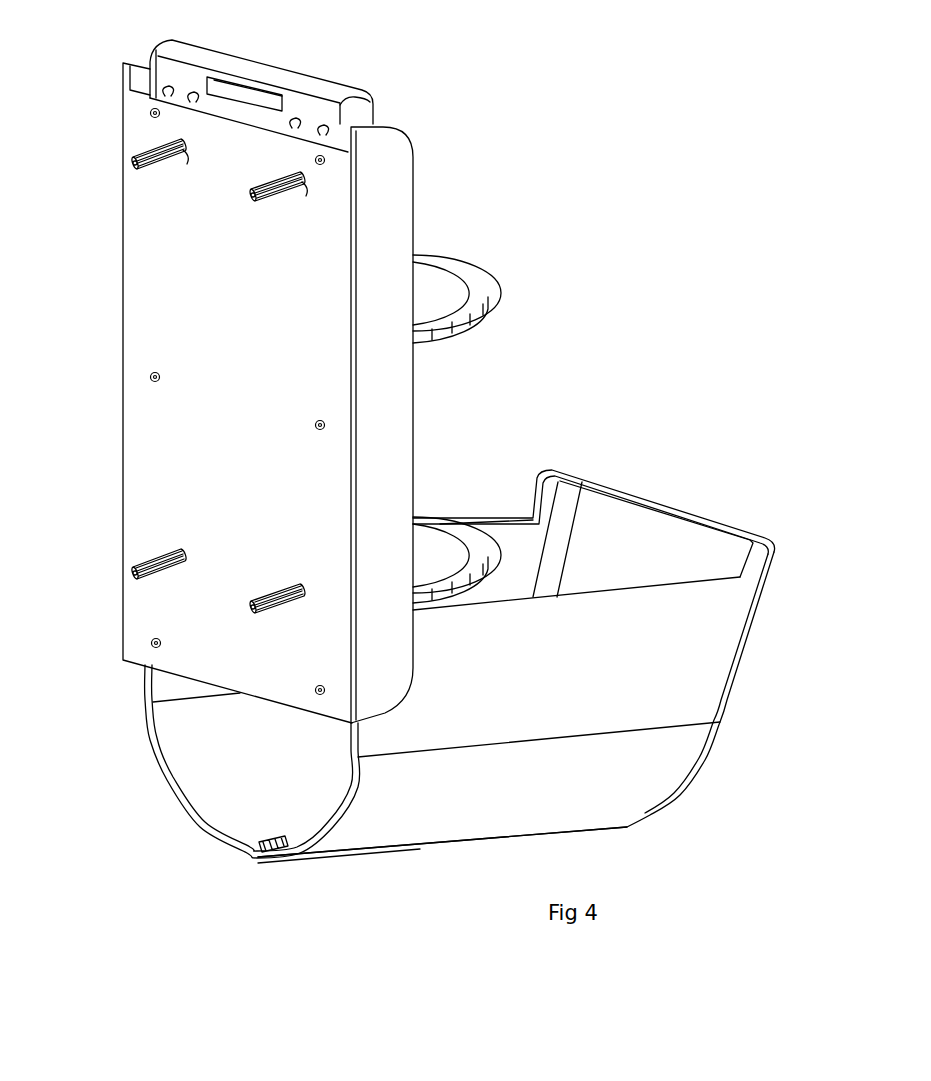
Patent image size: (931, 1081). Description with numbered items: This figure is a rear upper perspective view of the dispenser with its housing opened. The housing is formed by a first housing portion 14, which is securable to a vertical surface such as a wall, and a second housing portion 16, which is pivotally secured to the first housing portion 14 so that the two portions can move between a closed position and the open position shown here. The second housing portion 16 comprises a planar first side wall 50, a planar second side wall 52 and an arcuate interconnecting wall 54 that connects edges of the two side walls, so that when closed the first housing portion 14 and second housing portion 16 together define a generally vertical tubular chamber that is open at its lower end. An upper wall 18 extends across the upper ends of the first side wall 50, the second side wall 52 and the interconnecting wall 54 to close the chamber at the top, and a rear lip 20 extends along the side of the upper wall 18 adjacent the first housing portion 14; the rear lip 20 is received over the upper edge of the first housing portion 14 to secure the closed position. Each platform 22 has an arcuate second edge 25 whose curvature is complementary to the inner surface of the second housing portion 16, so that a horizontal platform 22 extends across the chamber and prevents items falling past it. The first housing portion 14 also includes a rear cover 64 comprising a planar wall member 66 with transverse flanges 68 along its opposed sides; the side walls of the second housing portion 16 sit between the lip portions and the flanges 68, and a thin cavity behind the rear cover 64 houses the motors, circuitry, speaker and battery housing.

The first housing portion 14 is at (390, 98).
The second housing portion 16 is at (251, 857).
The upper wall 18 is at (680, 556).
The rear lip 20 is at (600, 475).
The platform 22 is at (425, 297).
The arcuate second edge 25 is at (480, 302).
The first side wall 50 is at (592, 680).
The second side wall 52 is at (508, 563).
The interconnecting wall 54 is at (498, 800).
The rear cover 64 is at (179, 306).
The planar wall member 66 is at (240, 387).
The transverse flanges 68 is at (388, 230).